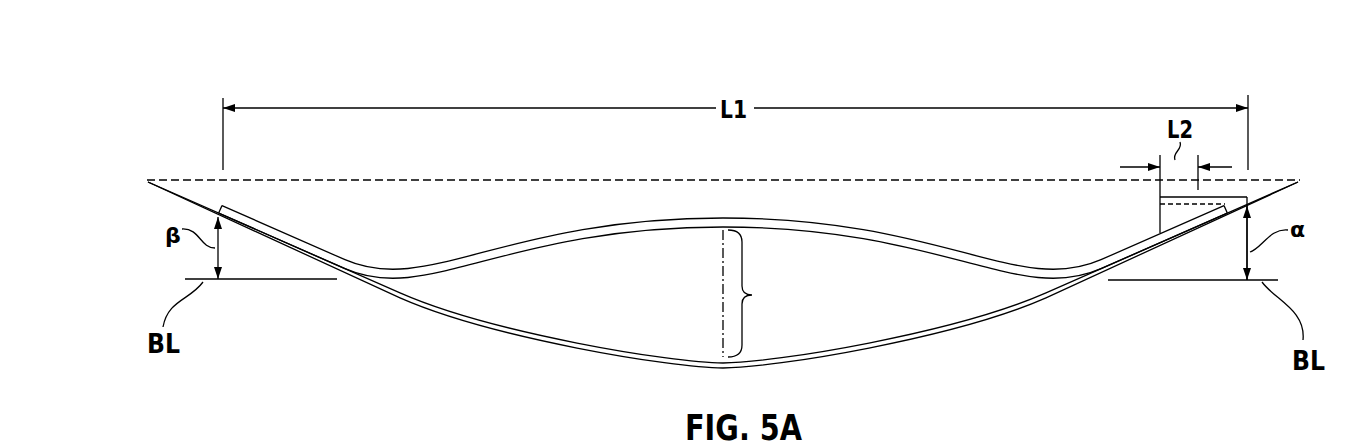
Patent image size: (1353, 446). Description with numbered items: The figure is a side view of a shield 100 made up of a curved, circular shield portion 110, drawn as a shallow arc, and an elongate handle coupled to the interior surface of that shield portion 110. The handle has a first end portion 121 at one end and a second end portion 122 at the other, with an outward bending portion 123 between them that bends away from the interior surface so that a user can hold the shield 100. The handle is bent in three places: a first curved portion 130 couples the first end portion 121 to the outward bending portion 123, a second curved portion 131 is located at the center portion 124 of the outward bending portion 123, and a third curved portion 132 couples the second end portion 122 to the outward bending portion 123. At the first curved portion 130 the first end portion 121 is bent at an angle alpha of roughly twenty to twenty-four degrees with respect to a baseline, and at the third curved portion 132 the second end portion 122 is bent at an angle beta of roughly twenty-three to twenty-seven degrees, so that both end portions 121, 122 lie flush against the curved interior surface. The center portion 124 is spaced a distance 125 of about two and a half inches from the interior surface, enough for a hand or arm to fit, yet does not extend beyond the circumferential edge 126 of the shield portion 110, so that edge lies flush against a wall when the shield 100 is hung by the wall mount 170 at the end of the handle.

The shield 100 is at (290, 92).
The shield portion 110 is at (905, 345).
The first end portion 121 is at (1145, 248).
The second end portion 122 is at (280, 245).
The outward bending portion 123 is at (630, 227).
The center portion 124 is at (721, 221).
The distance 125 is at (761, 293).
The circumferential edge 126 is at (873, 180).
The first curved portion 130 is at (1060, 277).
The second curved portion 131 is at (722, 217).
The third curved portion 132 is at (378, 280).
The wall mount 170 is at (1227, 193).